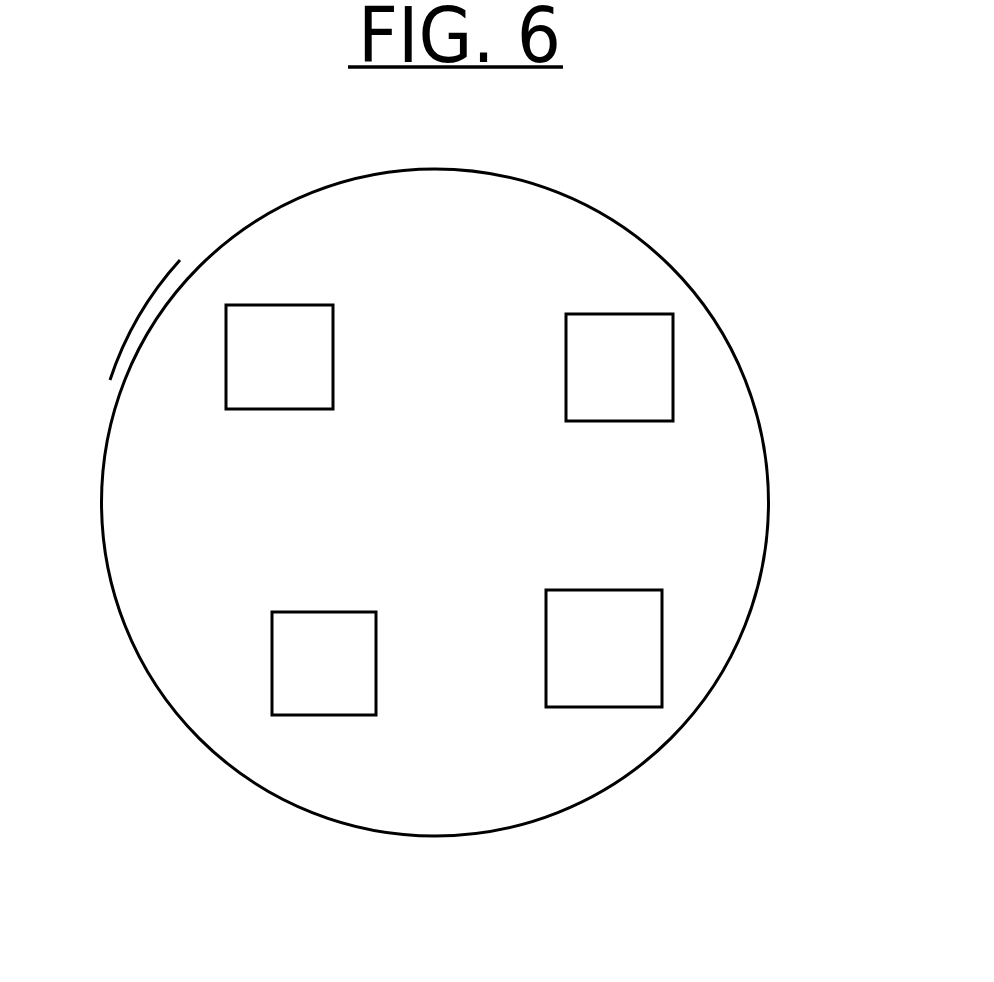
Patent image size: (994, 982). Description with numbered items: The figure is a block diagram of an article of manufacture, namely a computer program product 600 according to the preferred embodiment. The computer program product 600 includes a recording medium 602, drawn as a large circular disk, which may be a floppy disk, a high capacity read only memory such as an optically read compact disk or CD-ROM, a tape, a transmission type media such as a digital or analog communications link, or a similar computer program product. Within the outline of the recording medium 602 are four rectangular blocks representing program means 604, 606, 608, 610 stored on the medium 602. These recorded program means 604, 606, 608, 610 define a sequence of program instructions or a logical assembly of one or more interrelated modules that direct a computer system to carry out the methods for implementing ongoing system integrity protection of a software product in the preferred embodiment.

The computer program product 600 is at (728, 282).
The recording medium 602 is at (157, 298).
The program means 604 is at (324, 663).
The program means 606 is at (604, 648).
The program means 608 is at (619, 367).
The program means 610 is at (279, 357).